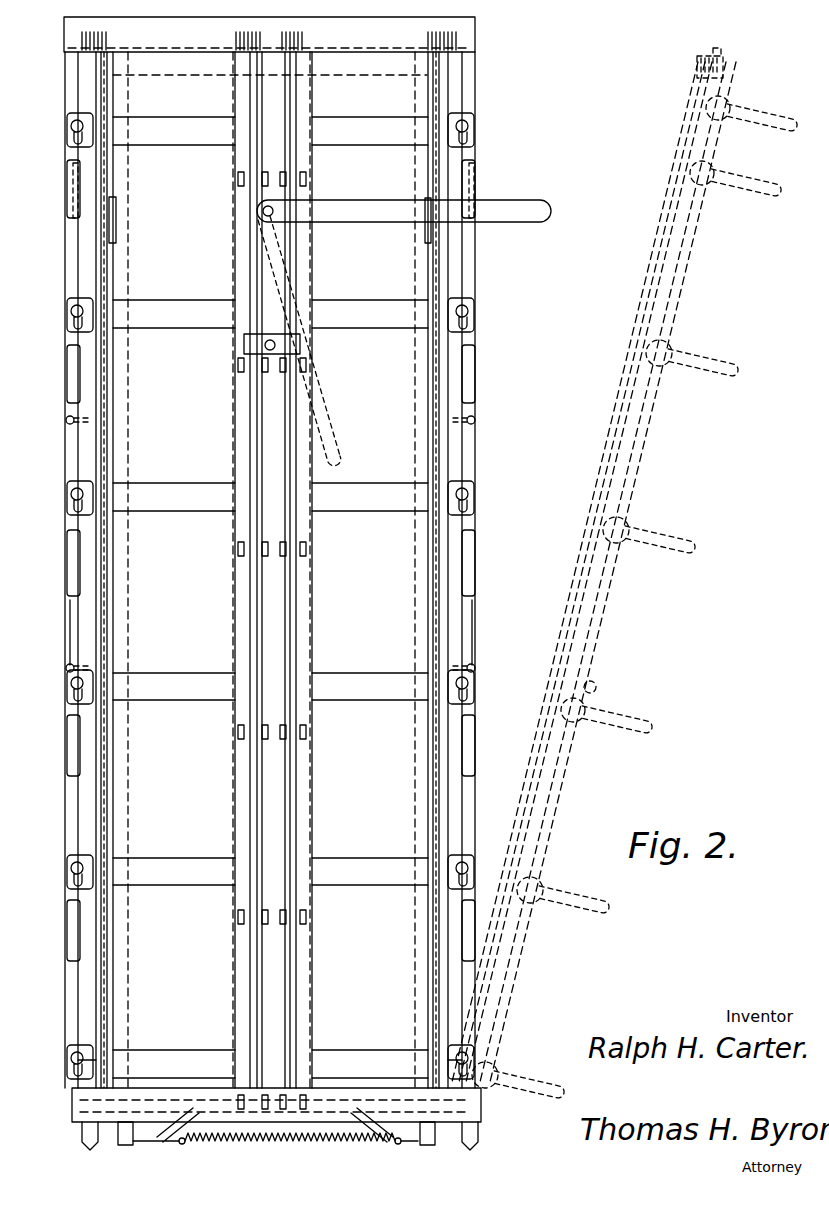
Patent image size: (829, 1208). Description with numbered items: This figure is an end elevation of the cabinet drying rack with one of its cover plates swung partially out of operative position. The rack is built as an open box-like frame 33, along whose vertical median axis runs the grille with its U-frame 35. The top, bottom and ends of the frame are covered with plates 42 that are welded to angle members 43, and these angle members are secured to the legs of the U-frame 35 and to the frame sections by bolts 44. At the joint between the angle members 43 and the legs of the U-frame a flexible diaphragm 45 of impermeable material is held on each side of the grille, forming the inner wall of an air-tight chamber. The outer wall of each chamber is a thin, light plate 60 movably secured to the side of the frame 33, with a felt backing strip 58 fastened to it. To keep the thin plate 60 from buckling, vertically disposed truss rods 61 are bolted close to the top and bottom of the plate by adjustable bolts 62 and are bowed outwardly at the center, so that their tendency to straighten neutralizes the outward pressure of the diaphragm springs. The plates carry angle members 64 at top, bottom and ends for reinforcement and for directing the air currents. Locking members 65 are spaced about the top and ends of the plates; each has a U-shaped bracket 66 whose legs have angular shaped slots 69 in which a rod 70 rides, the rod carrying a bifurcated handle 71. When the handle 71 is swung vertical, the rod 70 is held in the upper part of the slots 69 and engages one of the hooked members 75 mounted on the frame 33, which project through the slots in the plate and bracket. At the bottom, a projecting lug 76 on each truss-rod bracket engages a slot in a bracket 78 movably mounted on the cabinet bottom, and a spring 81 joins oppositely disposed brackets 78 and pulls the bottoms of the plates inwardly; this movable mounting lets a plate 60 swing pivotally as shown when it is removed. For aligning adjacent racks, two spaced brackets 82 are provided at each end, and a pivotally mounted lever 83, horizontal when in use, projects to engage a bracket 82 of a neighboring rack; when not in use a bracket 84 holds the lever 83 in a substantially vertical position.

The box-like frame 33 is at (114, 292).
The U-frame 35 is at (300, 797).
The plates 42 is at (271, 570).
The angle members 43 is at (248, 425).
The bolts 44 is at (240, 372).
The flexible diaphragm 45 is at (250, 462).
The backing strip 58 is at (104, 447).
The plates 60 is at (104, 412).
The truss rods 61 is at (68, 640).
The adjustable bolts 62 is at (66, 420).
The angle members 64 is at (66, 44).
The locking members 65 is at (66, 143).
The U-shaped bracket 66 is at (72, 1055).
The angular shaped slots 69 is at (72, 340).
The rod 70 is at (75, 1062).
The bifurcated handle 71 is at (68, 215).
The hooked members 75 is at (190, 118).
The projecting lug 76 is at (90, 1148).
The bracket 78 is at (126, 1146).
The spring 81 is at (232, 1148).
The brackets 82 is at (118, 212).
The lever 83 is at (385, 222).
The bracket 84 is at (242, 348).